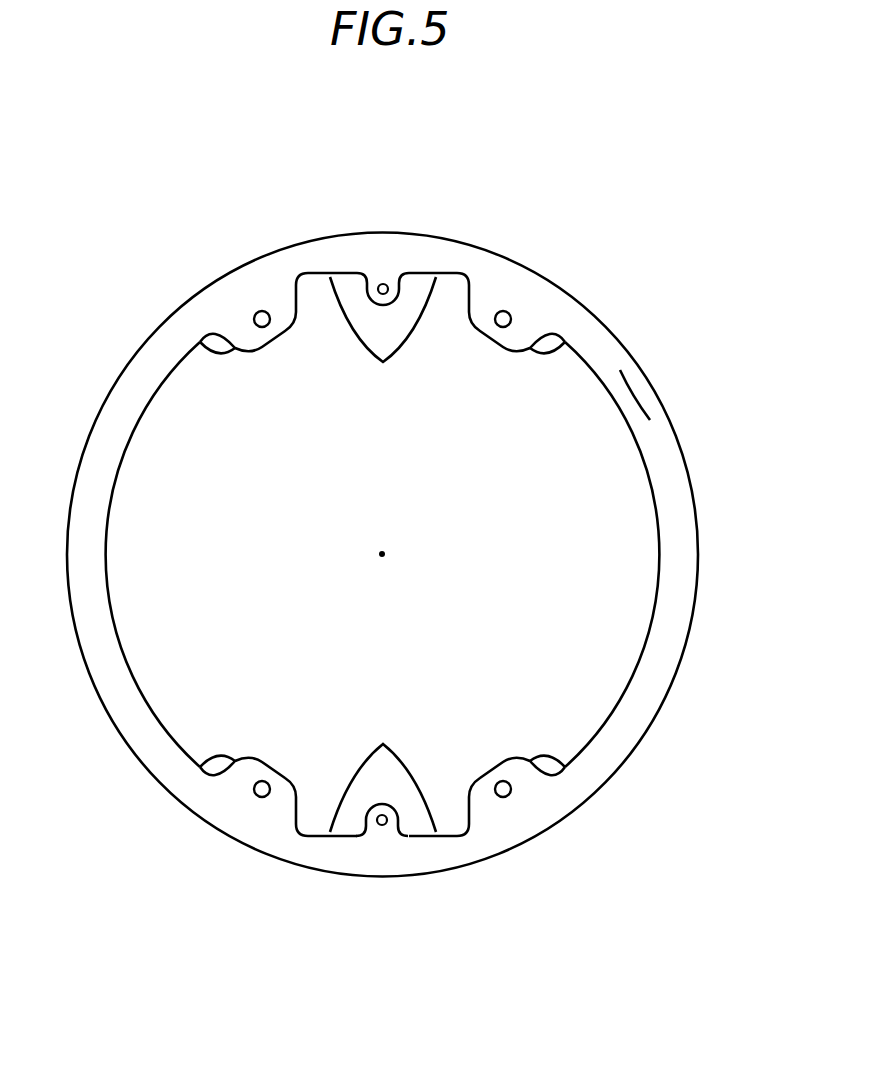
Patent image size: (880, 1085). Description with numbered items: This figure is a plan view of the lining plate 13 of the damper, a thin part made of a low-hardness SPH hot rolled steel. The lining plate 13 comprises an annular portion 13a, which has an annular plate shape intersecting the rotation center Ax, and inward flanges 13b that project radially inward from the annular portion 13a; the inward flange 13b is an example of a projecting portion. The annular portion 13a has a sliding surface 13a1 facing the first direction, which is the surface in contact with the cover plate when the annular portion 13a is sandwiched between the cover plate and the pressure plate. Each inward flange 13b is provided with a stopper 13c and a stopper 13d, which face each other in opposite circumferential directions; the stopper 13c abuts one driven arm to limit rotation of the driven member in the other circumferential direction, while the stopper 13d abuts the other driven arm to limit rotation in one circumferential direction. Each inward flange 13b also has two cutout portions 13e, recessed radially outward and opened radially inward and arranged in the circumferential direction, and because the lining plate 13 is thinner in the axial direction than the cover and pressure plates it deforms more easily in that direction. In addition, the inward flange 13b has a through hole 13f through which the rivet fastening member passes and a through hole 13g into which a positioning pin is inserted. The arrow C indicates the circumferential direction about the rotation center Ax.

The lining plate 13 is at (643, 282).
The annular portion 13a is at (435, 554).
The sliding surface 13a1 is at (628, 382).
The inward flange 13b is at (279, 324).
The stopper 13c is at (571, 345).
The stopper 13d is at (200, 342).
The cutout portion 13e is at (383, 363).
The through hole 13f is at (261, 311).
The through hole 13g is at (384, 284).
The rotation center Ax is at (386, 553).
The circumferential direction C is at (66, 393).